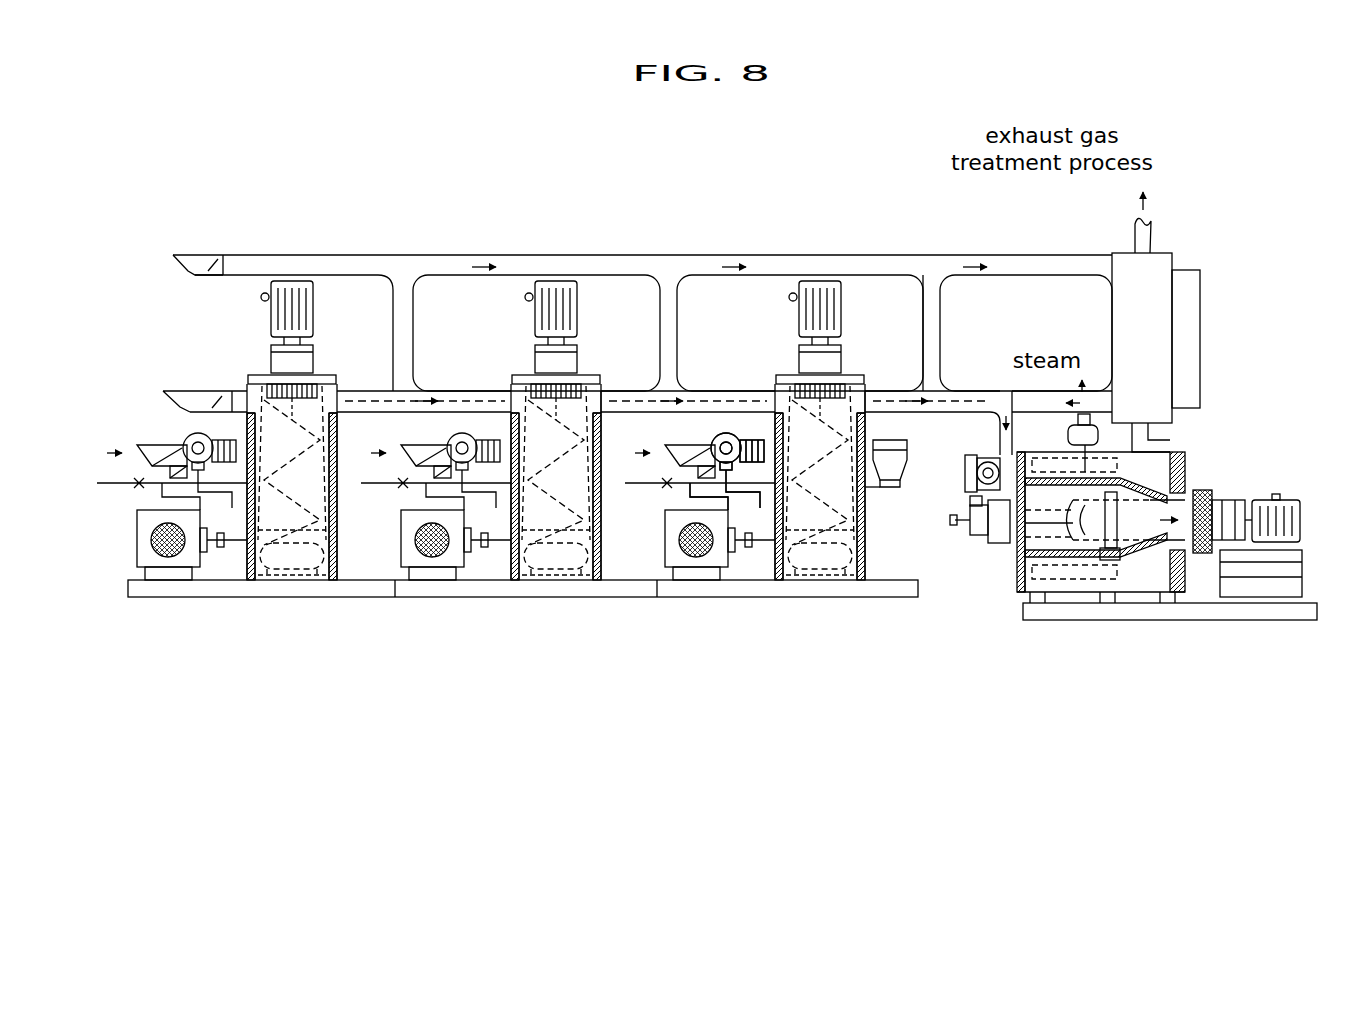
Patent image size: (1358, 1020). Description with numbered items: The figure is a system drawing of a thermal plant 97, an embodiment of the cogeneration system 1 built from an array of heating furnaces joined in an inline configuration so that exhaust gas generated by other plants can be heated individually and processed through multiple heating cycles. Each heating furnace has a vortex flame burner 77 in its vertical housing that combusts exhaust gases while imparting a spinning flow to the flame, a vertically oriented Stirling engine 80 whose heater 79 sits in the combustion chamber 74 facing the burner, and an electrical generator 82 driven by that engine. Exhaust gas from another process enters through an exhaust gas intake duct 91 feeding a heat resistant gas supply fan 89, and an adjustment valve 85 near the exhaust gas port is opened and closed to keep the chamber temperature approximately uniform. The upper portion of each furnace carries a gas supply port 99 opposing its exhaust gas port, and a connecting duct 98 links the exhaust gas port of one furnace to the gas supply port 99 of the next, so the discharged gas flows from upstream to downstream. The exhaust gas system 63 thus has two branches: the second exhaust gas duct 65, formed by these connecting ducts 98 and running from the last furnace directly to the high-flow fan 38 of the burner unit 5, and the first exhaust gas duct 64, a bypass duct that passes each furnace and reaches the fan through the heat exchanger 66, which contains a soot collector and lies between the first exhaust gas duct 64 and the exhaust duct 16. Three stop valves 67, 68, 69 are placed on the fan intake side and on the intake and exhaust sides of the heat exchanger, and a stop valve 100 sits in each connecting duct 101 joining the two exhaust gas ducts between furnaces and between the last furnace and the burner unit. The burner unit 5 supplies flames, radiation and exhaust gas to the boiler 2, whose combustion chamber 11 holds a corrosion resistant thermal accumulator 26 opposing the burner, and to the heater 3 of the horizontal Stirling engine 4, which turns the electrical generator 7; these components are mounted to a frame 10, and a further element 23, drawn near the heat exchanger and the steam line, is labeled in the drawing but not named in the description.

The cogeneration system 1 is at (434, 680).
The boiler 2 is at (1005, 601).
The heater 3 is at (1208, 490).
The Stirling engine 4 is at (1233, 502).
The burner unit 5 is at (1040, 527).
The electrical generator 7 is at (1300, 515).
The frame 10 is at (1175, 607).
The combustion chamber 11 is at (1100, 562).
The exhaust duct 16 is at (1152, 240).
The steam supply unit 23 is at (1160, 430).
The thermal accumulator 26 is at (1120, 545).
The high-flow fan 38 is at (988, 462).
The exhaust gas system 63 is at (680, 240).
The first exhaust gas duct 64 is at (955, 265).
The second exhaust gas duct 65 is at (958, 389).
The heat exchanger 66 is at (1153, 295).
The stop valve 67 is at (982, 393).
The stop valve 68 is at (1027, 268).
The stop valve 69 is at (1025, 402).
The combustion chamber 74 is at (870, 512).
The vortex flame burner 77 is at (817, 582).
The heater 79 is at (855, 385).
The Stirling engine 80 is at (800, 358).
The electrical generator 82 is at (795, 315).
The adjustment valve 85 is at (700, 398).
The heat resistant gas supply fan 89 is at (720, 440).
The exhaust gas intake duct 91 is at (678, 450).
The thermal plant 97 is at (333, 226).
The connecting duct 98 is at (462, 410).
The gas supply port 99 is at (757, 390).
The stop valve 100 is at (668, 372).
The connecting duct 101 is at (662, 305).